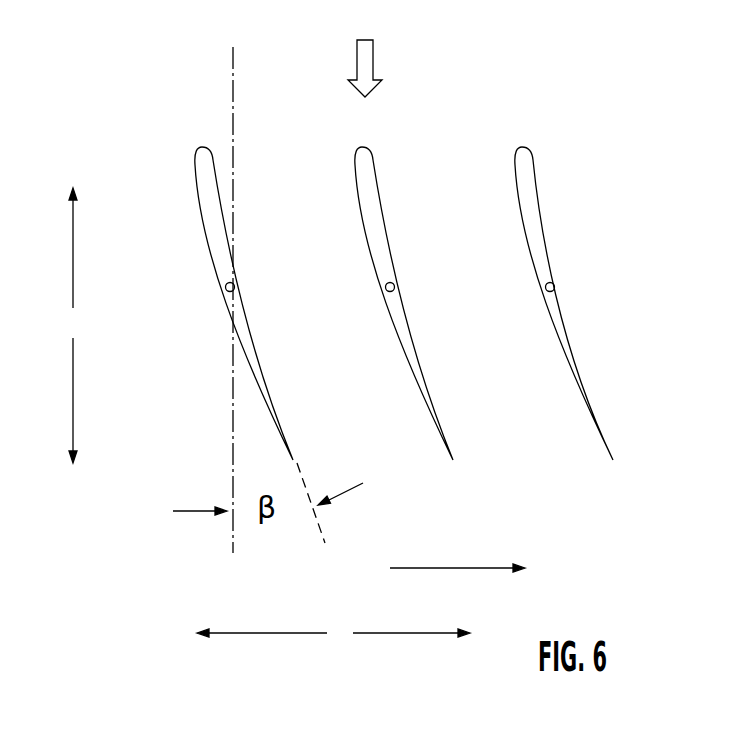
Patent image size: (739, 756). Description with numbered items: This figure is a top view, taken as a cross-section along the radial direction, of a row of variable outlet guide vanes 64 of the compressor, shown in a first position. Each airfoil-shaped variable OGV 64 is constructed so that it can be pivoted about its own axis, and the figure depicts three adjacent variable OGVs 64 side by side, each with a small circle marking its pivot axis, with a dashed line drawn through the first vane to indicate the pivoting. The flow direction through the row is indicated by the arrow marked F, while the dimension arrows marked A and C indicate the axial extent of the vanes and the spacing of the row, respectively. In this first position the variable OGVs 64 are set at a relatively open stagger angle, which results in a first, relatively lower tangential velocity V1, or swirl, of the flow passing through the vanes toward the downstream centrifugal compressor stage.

The variable outlet guide vane 64 is at (275, 398).
The flow direction F is at (365, 52).
The axial length of blade A is at (73, 325).
The circumferential pitch of blades C is at (333, 633).
The first tangential velocity V1 is at (469, 571).